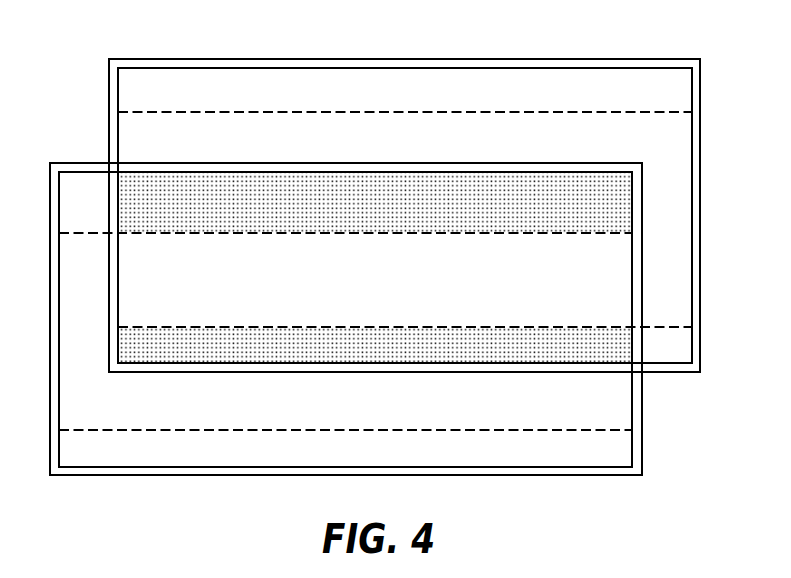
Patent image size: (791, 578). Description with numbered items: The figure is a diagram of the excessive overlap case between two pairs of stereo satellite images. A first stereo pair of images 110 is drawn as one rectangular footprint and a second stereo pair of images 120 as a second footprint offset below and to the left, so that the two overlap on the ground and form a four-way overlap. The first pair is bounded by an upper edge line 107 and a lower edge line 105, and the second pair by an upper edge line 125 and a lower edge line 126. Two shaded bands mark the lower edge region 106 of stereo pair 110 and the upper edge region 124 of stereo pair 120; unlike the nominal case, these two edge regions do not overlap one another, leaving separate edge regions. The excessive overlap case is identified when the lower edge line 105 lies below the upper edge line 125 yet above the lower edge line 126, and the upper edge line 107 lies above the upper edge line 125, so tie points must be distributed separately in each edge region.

The lower edge line 105 is at (403, 327).
The lower edge region 106 is at (207, 348).
The upper edge line 107 is at (405, 113).
The first stereo pair of images 110 is at (480, 141).
The second stereo pair of images 120 is at (422, 400).
The upper edge region 124 is at (155, 190).
The upper edge line 125 is at (347, 233).
The lower edge line 126 is at (345, 432).